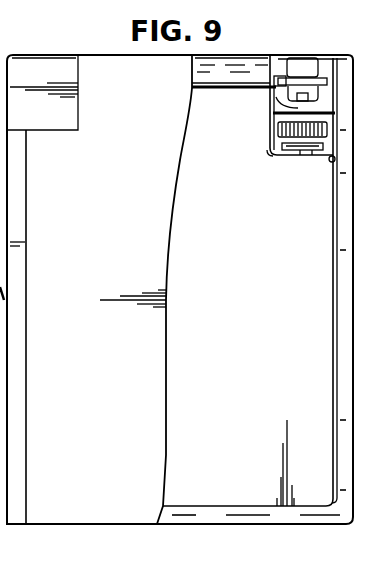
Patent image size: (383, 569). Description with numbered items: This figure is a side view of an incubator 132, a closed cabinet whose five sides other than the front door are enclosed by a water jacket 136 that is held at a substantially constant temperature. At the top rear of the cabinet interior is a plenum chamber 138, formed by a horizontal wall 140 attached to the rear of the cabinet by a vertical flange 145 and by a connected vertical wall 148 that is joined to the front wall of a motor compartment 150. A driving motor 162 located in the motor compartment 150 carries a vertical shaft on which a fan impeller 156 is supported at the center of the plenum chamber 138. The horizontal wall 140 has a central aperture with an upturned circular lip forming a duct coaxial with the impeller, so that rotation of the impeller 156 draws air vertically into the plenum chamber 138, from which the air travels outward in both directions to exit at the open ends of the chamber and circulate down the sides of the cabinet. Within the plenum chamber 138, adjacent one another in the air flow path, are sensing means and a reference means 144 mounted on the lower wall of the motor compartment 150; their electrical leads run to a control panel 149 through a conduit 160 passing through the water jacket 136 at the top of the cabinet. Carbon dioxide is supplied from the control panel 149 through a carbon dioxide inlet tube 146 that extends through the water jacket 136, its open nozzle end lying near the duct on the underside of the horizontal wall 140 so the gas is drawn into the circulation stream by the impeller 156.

The incubator 132 is at (92, 52).
The water jacket 136 is at (346, 244).
The plenum chamber 138 is at (265, 163).
The horizontal wall 140 is at (308, 157).
The reference means 144 is at (278, 122).
The vertical flange 145 is at (332, 163).
The carbon dioxide inlet tube 146 is at (199, 87).
The vertical wall 148 is at (270, 143).
The control panel 149 is at (22, 61).
The motor compartment 150 is at (327, 56).
The fan impeller 156 is at (278, 133).
The conduit 160 is at (235, 83).
The driving motor 162 is at (297, 66).